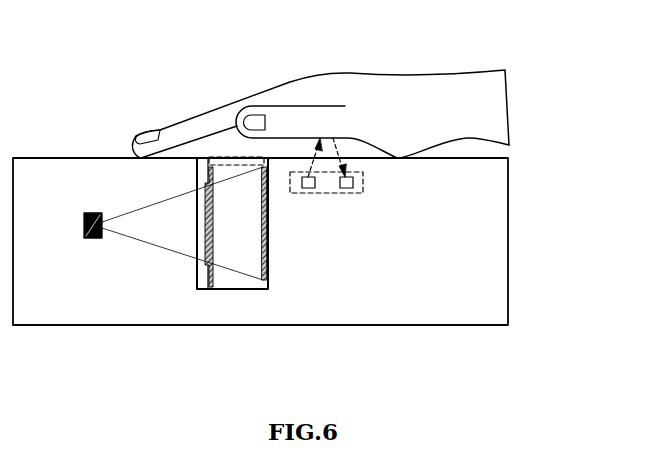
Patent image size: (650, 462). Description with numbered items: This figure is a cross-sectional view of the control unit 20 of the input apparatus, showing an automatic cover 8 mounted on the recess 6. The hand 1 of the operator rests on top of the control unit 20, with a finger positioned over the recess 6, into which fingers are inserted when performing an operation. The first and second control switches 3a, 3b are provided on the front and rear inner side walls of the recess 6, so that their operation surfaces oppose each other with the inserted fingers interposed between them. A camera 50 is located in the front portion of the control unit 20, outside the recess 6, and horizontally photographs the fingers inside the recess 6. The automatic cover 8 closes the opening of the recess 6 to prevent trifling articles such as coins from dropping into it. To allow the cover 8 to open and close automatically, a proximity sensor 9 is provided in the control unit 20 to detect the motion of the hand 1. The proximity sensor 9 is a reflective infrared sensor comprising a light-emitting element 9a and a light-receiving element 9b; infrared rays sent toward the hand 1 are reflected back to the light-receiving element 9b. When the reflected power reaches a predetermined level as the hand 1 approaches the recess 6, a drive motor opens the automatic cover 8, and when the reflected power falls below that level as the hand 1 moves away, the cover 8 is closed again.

The hand 1 is at (392, 74).
The automatic cover 8 is at (227, 157).
The camera 50 is at (93, 213).
The first control switch 3a is at (205, 232).
The second control switch 3b is at (267, 220).
The recess 6 is at (222, 289).
The proximity sensor 9 is at (363, 182).
The light-emitting element 9a is at (348, 190).
The light-receiving element 9b is at (311, 190).
The control unit 20 is at (508, 253).